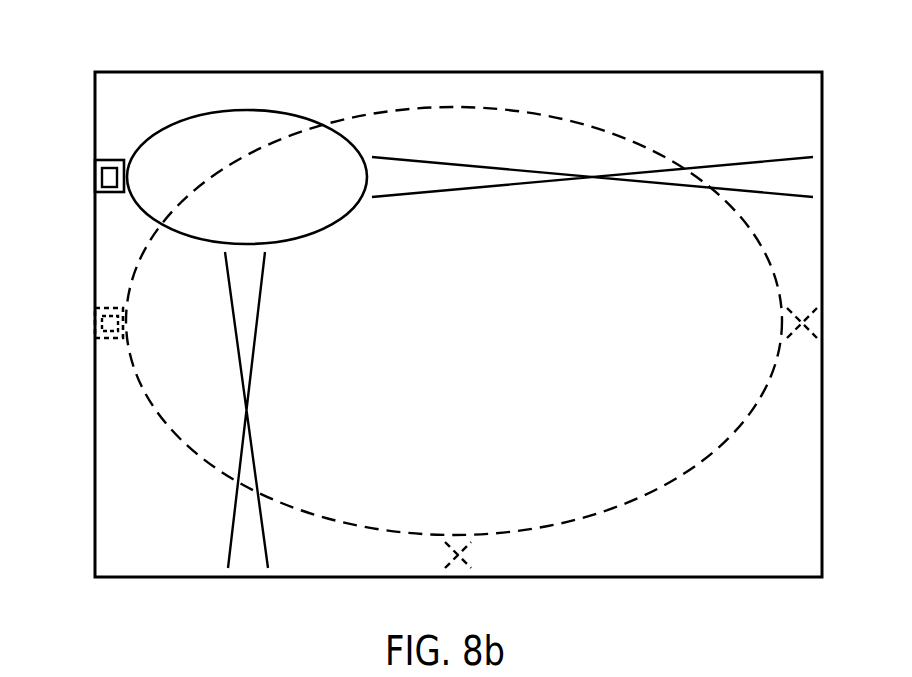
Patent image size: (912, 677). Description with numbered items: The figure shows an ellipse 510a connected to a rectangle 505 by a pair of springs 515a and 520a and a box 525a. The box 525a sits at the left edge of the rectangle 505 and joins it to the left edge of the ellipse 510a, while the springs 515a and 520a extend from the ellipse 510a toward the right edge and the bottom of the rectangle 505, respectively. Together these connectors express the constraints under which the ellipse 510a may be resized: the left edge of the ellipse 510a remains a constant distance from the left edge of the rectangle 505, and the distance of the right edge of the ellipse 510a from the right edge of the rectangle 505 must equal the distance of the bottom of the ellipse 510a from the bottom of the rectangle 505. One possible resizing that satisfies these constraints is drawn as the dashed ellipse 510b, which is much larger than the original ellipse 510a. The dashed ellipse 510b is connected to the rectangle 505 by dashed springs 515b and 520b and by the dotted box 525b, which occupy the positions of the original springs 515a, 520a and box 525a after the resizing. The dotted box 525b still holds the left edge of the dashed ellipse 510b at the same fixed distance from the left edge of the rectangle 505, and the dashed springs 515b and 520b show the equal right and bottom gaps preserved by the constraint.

The rectangle 505 is at (615, 72).
The ellipse 510a is at (238, 110).
The dashed ellipse 510b is at (740, 427).
The spring 515a is at (613, 177).
The dashed spring 515b is at (802, 323).
The spring 520a is at (250, 410).
The dashed spring 520b is at (458, 555).
The box 525a is at (110, 192).
The dotted box 525b is at (110, 338).